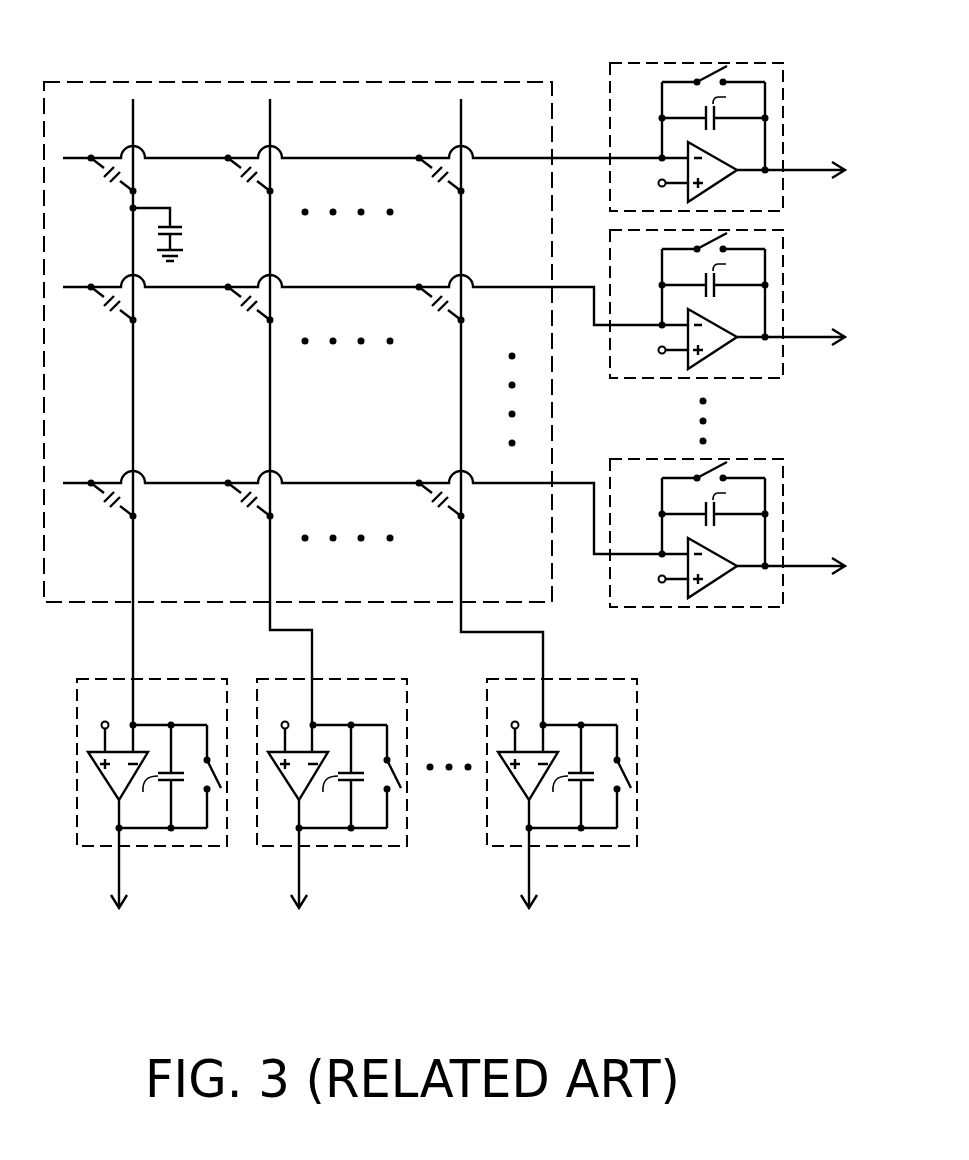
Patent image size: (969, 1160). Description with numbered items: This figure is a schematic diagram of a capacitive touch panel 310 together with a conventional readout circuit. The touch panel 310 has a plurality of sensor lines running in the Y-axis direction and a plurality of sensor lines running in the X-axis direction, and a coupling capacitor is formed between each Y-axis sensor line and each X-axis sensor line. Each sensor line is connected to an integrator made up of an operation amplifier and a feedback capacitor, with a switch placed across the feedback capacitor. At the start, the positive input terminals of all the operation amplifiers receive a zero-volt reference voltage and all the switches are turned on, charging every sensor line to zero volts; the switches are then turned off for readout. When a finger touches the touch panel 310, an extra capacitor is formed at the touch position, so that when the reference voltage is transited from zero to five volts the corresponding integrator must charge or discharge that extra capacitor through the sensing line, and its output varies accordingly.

The capacitive touch panel 310 is at (360, 80).